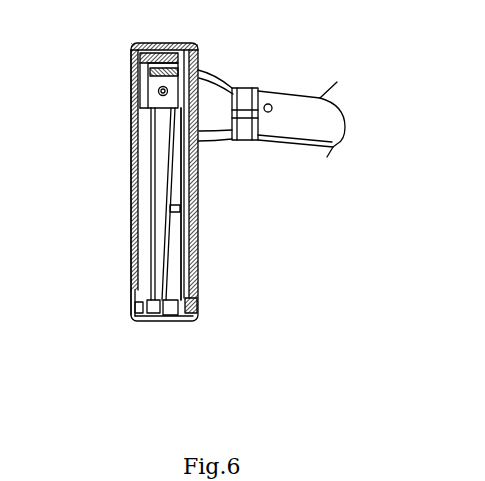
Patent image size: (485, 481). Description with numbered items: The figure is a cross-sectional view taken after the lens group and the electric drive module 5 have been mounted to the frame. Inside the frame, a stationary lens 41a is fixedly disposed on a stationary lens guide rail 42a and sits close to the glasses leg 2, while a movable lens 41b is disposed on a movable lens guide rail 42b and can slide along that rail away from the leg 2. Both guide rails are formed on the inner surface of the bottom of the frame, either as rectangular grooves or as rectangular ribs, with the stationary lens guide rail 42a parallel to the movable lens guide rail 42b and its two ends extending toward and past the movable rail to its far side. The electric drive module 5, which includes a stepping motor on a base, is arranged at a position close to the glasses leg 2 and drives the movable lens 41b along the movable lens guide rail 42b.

The glasses leg 2 is at (293, 112).
The electric drive module 5 is at (168, 88).
The stationary lens 41a is at (183, 212).
The movable lens 41b is at (140, 210).
The stationary lens guide rail 42a is at (197, 297).
The movable lens guide rail 42b is at (133, 320).